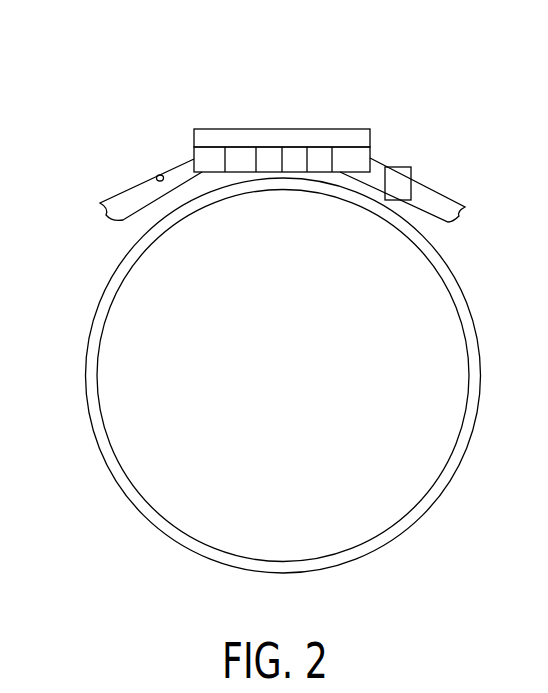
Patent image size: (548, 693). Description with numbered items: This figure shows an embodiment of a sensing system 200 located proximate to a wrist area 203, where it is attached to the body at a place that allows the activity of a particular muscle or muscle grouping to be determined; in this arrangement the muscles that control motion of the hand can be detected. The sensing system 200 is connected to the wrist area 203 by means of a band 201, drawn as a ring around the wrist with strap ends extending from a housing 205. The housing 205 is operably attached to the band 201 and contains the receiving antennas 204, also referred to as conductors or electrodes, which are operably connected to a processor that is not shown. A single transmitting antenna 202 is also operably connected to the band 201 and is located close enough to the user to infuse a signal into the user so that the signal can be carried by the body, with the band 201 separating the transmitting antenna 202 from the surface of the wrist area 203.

The sensing system 200 is at (124, 124).
The band 201 is at (137, 187).
The transmitting antenna 202 is at (397, 167).
The wrist area 203 is at (108, 475).
The receiving antennas 204 is at (240, 145).
The housing 205 is at (340, 135).